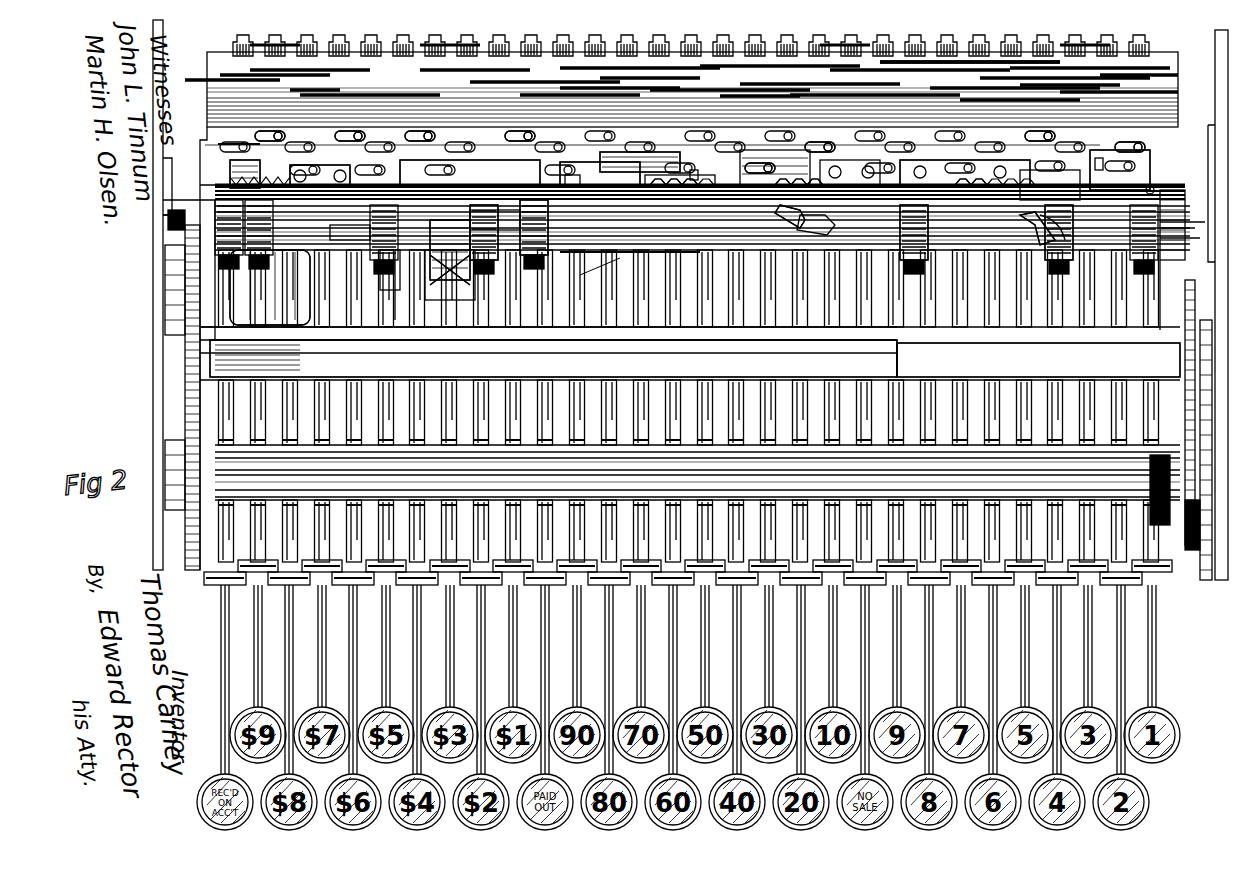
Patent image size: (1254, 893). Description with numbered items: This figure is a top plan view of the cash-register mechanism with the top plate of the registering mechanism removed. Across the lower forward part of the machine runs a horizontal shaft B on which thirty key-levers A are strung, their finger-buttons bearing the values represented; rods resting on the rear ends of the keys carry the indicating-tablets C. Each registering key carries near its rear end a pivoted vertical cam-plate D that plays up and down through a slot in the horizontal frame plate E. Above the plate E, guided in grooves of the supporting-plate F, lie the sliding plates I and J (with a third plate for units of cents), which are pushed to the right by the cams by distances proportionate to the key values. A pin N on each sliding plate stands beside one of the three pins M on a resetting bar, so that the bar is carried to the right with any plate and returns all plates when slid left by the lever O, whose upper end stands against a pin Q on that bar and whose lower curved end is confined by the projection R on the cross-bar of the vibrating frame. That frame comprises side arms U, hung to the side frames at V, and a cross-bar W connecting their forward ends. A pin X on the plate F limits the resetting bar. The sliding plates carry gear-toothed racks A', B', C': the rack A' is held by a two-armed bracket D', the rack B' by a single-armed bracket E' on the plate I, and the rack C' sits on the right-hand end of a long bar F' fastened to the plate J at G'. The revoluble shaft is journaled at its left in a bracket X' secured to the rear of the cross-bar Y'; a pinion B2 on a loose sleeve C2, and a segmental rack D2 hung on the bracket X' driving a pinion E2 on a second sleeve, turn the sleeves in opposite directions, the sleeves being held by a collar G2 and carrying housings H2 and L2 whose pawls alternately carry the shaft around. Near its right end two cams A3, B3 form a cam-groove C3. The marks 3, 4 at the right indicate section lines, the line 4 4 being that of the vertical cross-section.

The key-lever A is at (681, 695).
The section line 4 is at (218, 146).
The shaft end 3 is at (1204, 212).
The sliding plate I is at (1232, 220).
The single-armed bracket E' is at (527, 136).
The horizontal shaft B is at (326, 122).
The cam-plate D is at (778, 133).
The horizontal plate E is at (658, 125).
The supporting-plate F is at (600, 143).
The long bar F' is at (640, 134).
The gear-toothed rack C' is at (702, 141).
The gear-toothed rack B' is at (820, 142).
The two-armed bracket D' is at (957, 142).
The gear-toothed rack A' is at (946, 149).
The indicating-tablet C is at (969, 66).
The fastening point G' is at (320, 165).
The sliding plate J is at (245, 171).
The pin M is at (1110, 178).
The pin N is at (694, 172).
The pin X is at (1164, 179).
The projection R is at (425, 235).
The pinion E2 is at (480, 210).
The collar G2 is at (596, 252).
The cross-bar W is at (776, 330).
The housing H2 is at (534, 258).
The sleeve C2 is at (490, 244).
The pinion B2 is at (467, 281).
The pin Q is at (778, 208).
The lever O is at (828, 222).
The pivot V is at (905, 255).
The cam B3 is at (1037, 230).
The cam A3 is at (1058, 224).
The cam-groove C3 is at (1062, 248).
The side arm U is at (1160, 322).
The cross-bar Y' is at (695, 358).
The housing L2 is at (390, 285).
The bracket X' is at (389, 310).
The segmental rack D2 is at (443, 300).